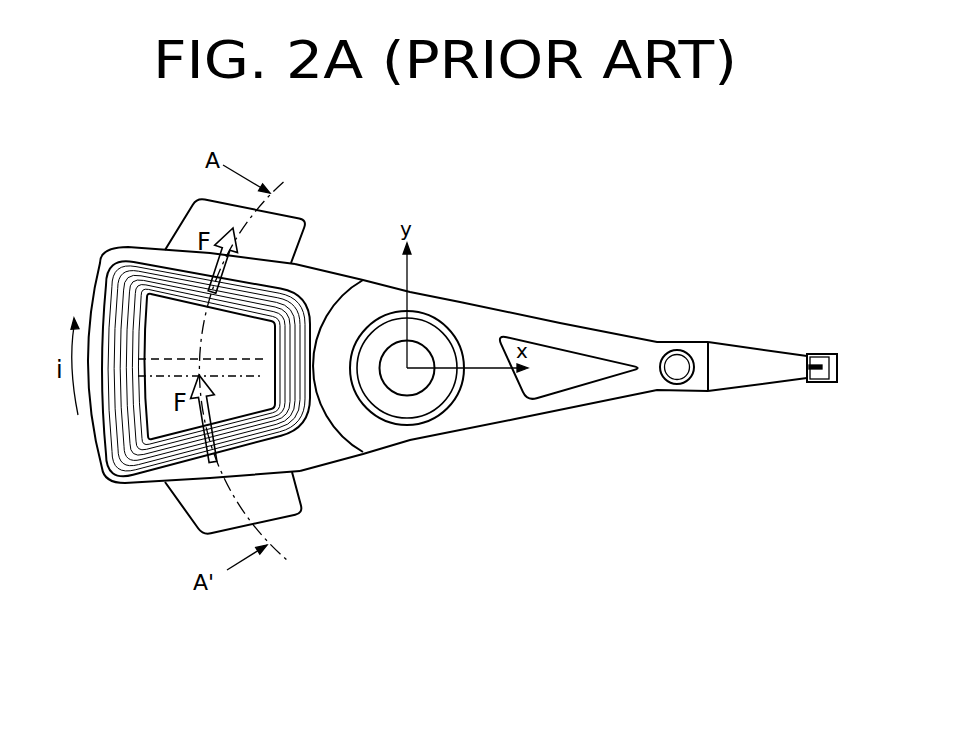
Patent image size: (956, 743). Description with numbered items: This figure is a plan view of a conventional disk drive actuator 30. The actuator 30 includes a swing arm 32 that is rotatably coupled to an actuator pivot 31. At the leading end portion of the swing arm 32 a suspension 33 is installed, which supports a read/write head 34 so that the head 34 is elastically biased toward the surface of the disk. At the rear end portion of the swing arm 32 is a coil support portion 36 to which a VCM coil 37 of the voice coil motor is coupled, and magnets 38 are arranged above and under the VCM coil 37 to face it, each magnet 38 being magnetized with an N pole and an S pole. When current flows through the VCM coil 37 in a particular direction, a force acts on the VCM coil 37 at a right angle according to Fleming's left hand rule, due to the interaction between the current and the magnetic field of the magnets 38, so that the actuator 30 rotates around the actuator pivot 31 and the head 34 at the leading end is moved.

The actuator 30 is at (517, 273).
The actuator pivot 31 is at (418, 352).
The swing arm 32 is at (598, 330).
The suspension 33 is at (744, 360).
The read/write head 34 is at (833, 355).
The coil support portion 36 is at (135, 250).
The VCM coil 37 is at (120, 307).
The magnets 38 is at (306, 497).